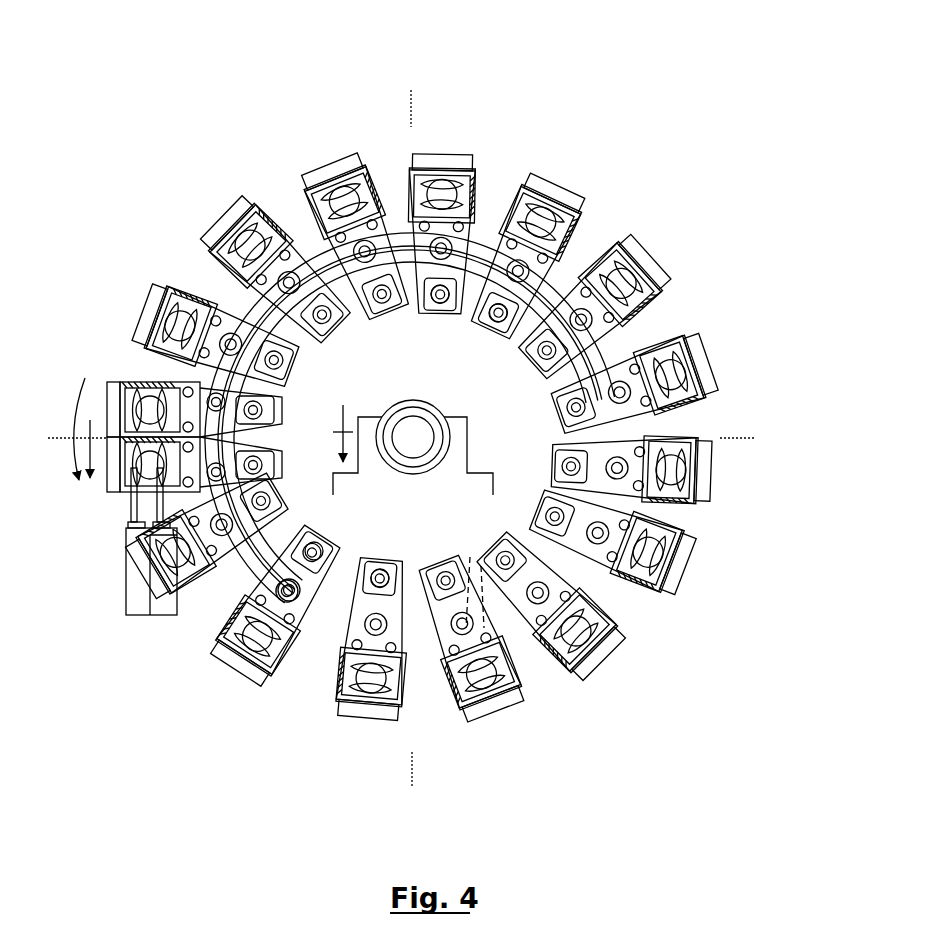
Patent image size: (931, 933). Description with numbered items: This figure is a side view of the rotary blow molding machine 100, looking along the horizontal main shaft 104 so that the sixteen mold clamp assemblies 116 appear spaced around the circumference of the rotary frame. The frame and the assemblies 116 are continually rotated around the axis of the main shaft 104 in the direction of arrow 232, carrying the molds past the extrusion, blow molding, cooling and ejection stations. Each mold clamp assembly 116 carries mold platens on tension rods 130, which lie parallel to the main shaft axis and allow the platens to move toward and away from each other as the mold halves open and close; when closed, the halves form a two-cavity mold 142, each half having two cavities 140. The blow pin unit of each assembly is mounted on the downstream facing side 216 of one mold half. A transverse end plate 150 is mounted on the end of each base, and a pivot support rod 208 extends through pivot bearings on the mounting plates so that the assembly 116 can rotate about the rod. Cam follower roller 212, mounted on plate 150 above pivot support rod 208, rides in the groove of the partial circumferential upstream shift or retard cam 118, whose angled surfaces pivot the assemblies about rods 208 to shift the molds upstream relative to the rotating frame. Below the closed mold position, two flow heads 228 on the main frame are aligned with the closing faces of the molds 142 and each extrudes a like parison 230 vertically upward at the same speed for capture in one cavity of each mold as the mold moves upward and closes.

The rotary blow molding machine 100 is at (181, 100).
The main shaft 104 is at (423, 432).
The mold clamp assembly 116 is at (643, 242).
The retard cam 118 is at (250, 284).
The tension rod 130 is at (470, 557).
The cavity 140 is at (660, 550).
The two-cavity mold 142 is at (677, 338).
The transverse end plate 150 is at (283, 535).
The pivot support rod 208 is at (496, 316).
The cam follower roller 212 is at (363, 527).
The downstream facing side 216 is at (296, 208).
The flow head 228 is at (172, 614).
The parison 230 is at (131, 508).
The arrow 232 is at (74, 410).